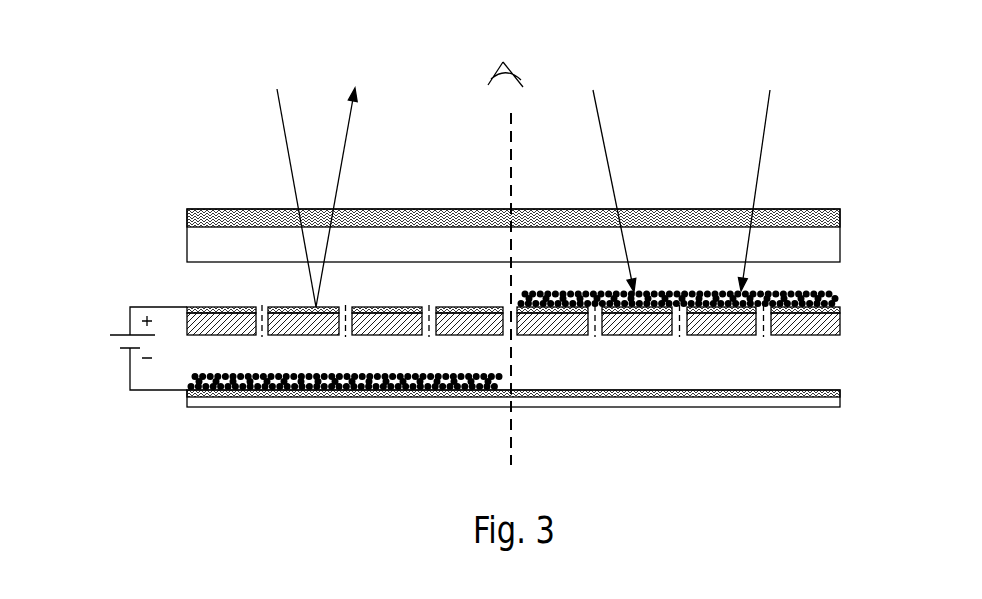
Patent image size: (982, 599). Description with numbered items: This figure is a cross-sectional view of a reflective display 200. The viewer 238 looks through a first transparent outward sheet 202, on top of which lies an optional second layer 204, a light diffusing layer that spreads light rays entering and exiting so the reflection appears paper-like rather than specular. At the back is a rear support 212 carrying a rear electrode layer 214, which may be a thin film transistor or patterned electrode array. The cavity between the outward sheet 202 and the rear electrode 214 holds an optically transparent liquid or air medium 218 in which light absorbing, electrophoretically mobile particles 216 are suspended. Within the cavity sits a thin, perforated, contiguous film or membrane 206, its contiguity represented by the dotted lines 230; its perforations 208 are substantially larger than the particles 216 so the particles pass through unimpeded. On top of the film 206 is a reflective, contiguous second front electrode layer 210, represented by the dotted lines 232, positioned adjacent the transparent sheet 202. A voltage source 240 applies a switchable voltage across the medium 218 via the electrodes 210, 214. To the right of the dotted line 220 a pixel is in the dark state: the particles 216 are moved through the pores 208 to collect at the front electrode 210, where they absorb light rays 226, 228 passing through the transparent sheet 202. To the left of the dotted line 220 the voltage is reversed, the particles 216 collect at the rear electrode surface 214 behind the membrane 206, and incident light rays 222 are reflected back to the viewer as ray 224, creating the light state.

The display 200 is at (802, 196).
The transparent outward sheet 202 is at (187, 245).
The second layer 204 is at (381, 214).
The perforated film 206 is at (842, 320).
The perforations 208 is at (762, 323).
The second front electrode layer 210 is at (222, 307).
The rear support 212 is at (645, 407).
The rear electrode layer 214 is at (823, 392).
The particles 216 is at (478, 372).
The medium 218 is at (278, 290).
The dotted line 220 is at (505, 143).
The incident light rays 222 is at (280, 118).
The reflected ray 224 is at (347, 138).
The light ray 226 is at (598, 112).
The light ray 228 is at (765, 118).
The dotted lines 230 is at (345, 338).
The dotted lines 232 is at (428, 305).
The viewer 238 is at (512, 78).
The voltage source 240 is at (130, 370).